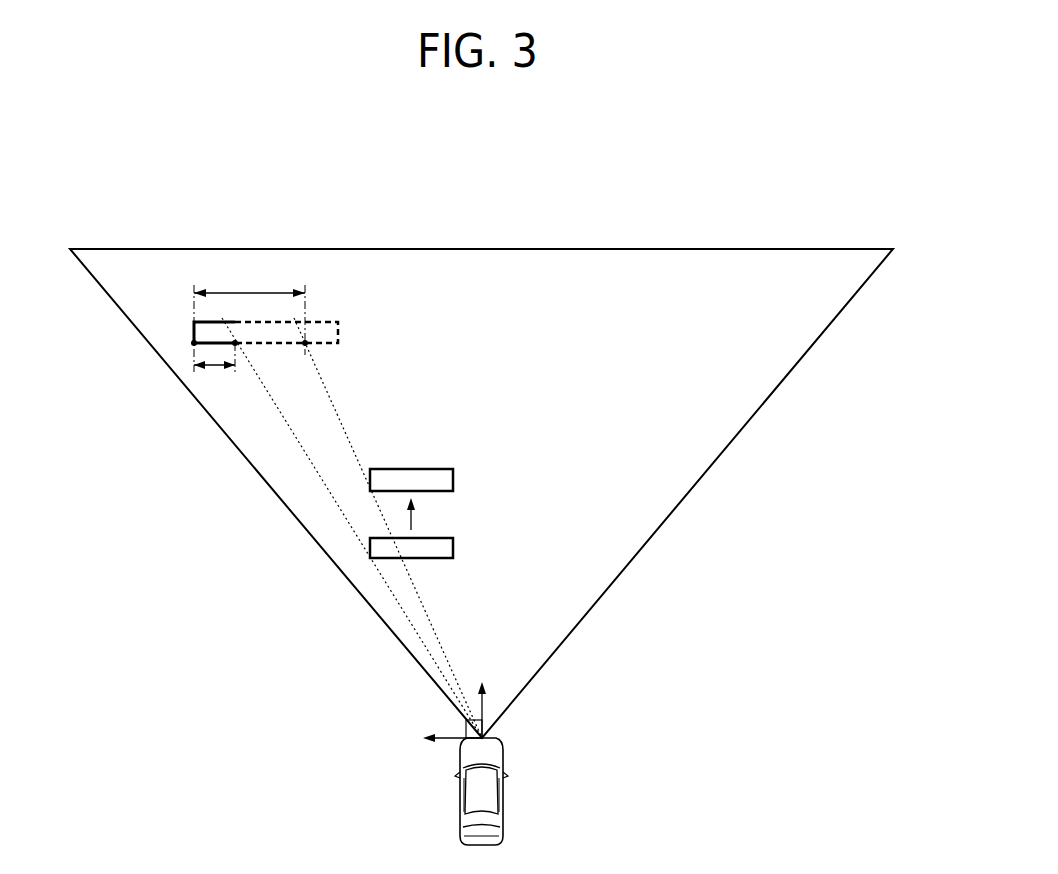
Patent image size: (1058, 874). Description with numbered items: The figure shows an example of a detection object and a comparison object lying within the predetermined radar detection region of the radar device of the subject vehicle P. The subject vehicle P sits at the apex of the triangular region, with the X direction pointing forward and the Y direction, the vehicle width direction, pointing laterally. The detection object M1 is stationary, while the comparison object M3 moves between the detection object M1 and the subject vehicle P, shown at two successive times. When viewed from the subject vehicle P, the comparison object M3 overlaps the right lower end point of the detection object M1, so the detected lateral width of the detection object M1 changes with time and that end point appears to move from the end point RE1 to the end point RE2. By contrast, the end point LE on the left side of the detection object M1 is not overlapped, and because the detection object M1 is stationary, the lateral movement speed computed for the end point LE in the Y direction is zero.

The detection object M1 is at (332, 322).
The comparison object M3 is at (453, 547).
The end point on the left side LE is at (194, 343).
The end point RE1 is at (235, 343).
The end point RE2 is at (305, 343).
The X direction X is at (482, 699).
The Y direction Y is at (443, 739).
The subject vehicle P is at (497, 792).